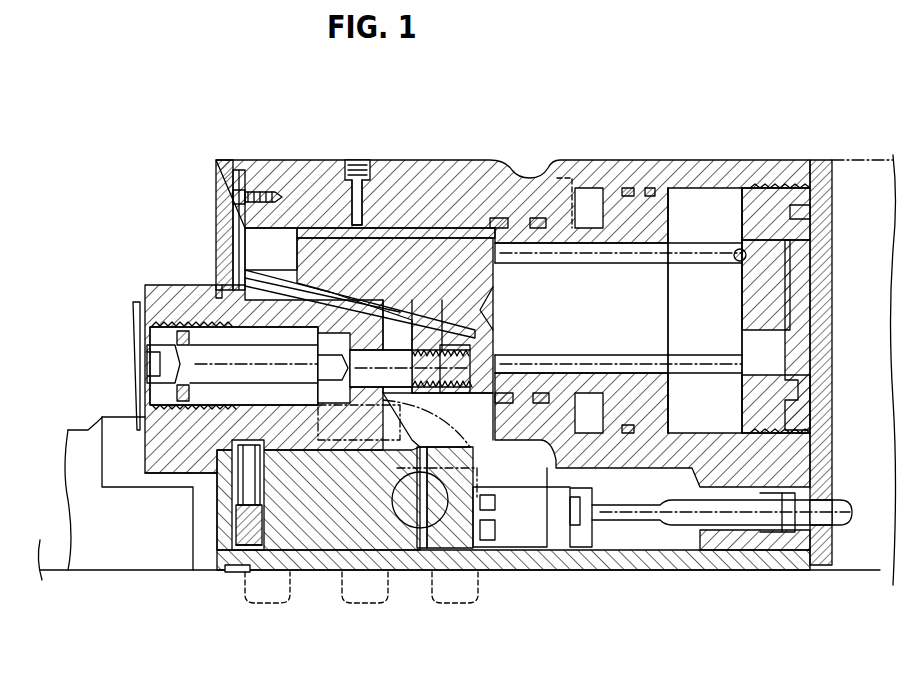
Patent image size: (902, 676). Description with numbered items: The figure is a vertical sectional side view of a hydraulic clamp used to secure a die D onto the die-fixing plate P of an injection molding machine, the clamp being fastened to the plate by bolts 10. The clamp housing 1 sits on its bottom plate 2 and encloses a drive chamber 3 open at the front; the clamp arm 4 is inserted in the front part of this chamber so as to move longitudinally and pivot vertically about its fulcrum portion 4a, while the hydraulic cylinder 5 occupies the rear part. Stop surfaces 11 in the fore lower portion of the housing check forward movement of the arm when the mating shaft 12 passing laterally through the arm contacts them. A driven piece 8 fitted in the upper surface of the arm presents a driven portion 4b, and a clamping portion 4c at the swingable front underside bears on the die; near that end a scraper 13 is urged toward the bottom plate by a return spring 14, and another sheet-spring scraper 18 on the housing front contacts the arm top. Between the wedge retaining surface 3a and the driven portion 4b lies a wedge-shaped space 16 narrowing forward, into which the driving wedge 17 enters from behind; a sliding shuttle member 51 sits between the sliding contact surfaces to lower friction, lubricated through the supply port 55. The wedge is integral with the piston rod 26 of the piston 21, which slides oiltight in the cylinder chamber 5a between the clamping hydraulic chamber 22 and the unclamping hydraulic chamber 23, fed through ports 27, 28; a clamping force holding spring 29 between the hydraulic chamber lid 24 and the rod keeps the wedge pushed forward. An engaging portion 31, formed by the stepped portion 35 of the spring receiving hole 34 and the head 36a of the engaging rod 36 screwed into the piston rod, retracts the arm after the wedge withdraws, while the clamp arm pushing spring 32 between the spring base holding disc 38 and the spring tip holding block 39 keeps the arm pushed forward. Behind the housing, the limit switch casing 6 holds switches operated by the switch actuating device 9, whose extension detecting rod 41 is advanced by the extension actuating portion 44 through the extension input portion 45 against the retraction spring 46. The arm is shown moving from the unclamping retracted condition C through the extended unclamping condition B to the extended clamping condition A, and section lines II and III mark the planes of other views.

The clamp housing 1 is at (490, 158).
The bottom plate 2 is at (627, 572).
The drive chamber 3 is at (395, 342).
The wedge retaining surface 3a is at (395, 226).
The clamp arm 4 is at (146, 432).
The fulcrum portion 4a is at (412, 530).
The driven portion 4b is at (218, 226).
The clamping portion 4c is at (150, 512).
The hydraulic cylinder 5 is at (712, 190).
The cylinder chamber 5a is at (714, 185).
The limit switch casing 6 is at (842, 160).
The driven piece 8 is at (272, 296).
The switch actuating device 9 is at (850, 482).
The bolts 10 is at (250, 592).
The stop surfaces 11 is at (345, 588).
The mating shaft 12 is at (470, 550).
The scraper 13 is at (232, 573).
The return spring 14 is at (265, 520).
The wedge-shaped space 16 is at (232, 236).
The driving wedge 17 is at (305, 215).
The scraper 18 is at (255, 255).
The piston 21 is at (655, 186).
The clamping hydraulic chamber 22 is at (705, 310).
The unclamping hydraulic chamber 23 is at (588, 186).
The hydraulic chamber lid 24 is at (818, 242).
The piston rod 26 is at (588, 226).
The pressure oil supply/discharge port 27 is at (733, 255).
The pressure oil supply/discharge port 28 is at (560, 180).
The clamping force holding spring 29 is at (812, 272).
The engaging portion 31 is at (322, 516).
The clamp arm pushing spring 32 is at (150, 336).
The spring receiving hole 34 is at (255, 404).
The stepped portion 35 is at (385, 405).
The engaging rod 36 is at (402, 350).
The head of engaging rod 36a is at (330, 420).
The spring base holding disc 38 is at (316, 362).
The spring tip holding block 39 is at (148, 350).
The extension detecting rod 41 is at (655, 528).
The extension actuating portion 44 is at (586, 548).
The extension input portion 45 is at (575, 548).
The retraction spring 46 is at (785, 533).
The sliding shuttle member 51 is at (347, 226).
The lubricating oil supply port 55 is at (360, 180).
The extended clamping condition A is at (130, 330).
The extended unclamping condition B is at (160, 282).
The unclamping retracted condition C is at (190, 455).
The die D is at (70, 498).
The die-fixing plate P is at (38, 545).
The section line II is at (160, 525).
The section line III is at (334, 131).